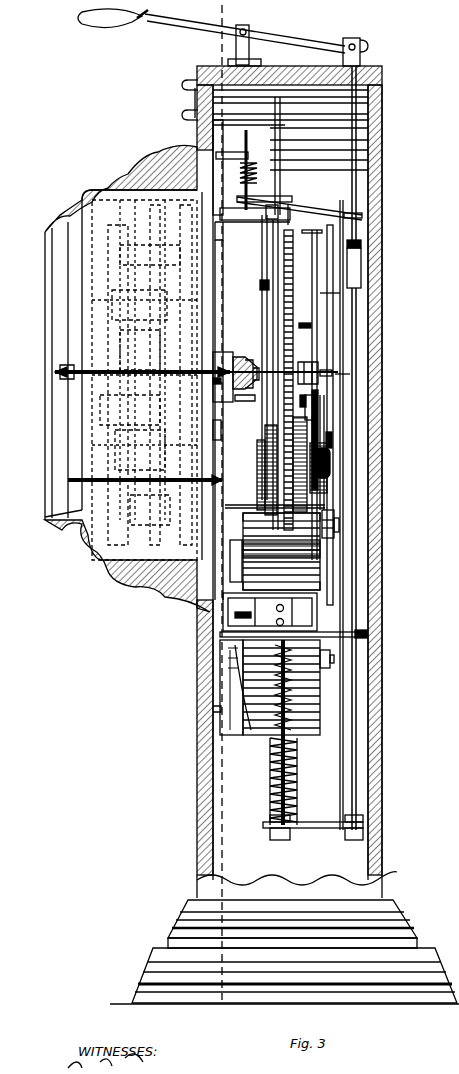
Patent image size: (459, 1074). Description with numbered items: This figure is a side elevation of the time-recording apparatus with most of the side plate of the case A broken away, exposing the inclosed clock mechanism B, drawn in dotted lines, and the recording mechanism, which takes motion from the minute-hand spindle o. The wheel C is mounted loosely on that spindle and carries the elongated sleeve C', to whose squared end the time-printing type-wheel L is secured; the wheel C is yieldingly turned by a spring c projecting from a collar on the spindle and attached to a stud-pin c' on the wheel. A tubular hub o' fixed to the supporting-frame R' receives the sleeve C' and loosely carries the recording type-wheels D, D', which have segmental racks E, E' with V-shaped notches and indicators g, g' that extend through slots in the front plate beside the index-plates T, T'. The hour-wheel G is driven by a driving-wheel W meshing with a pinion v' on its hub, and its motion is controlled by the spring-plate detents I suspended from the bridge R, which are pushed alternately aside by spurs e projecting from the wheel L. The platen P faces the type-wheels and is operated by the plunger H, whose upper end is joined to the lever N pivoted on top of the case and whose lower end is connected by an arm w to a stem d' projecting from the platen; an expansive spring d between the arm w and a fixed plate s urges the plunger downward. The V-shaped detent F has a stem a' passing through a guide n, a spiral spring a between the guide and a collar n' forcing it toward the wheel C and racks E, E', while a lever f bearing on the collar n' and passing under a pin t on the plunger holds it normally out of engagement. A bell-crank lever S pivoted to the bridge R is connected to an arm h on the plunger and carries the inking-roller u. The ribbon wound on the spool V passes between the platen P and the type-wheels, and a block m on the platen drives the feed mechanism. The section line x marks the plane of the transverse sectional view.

The case A is at (382, 180).
The clock mechanism B is at (127, 378).
The lever N is at (223, 37).
The section line x is at (222, 517).
The indicator g is at (147, 112).
The indicator g' is at (148, 81).
The index-plate T is at (243, 104).
The index-plate T' is at (245, 79).
The plunger H is at (352, 596).
The arm h is at (356, 264).
The spiral spring a is at (241, 175).
The stem a' is at (249, 167).
The guide n is at (232, 157).
The collar n' is at (252, 206).
The lever f is at (318, 208).
The pin t is at (350, 214).
The detent F is at (235, 224).
The segmental rack E is at (256, 357).
The segmental rack E' is at (290, 375).
The wheel C is at (227, 420).
The sleeve C' is at (275, 366).
The spring c is at (218, 363).
The stud-pin c' is at (219, 430).
The time-printing type-wheel L is at (293, 290).
The detent I is at (312, 298).
The bridge R is at (328, 415).
The supporting-frame R' is at (207, 458).
The spur e is at (303, 358).
The minute-hand spindle o is at (315, 365).
The tubular hub o' is at (245, 405).
The bell-crank lever S is at (336, 372).
The recording type-wheel D is at (256, 470).
The recording type-wheel D' is at (280, 453).
The driving-wheel W is at (322, 424).
The pinion v' is at (361, 455).
The hour-wheel G is at (275, 547).
The inking-roller u is at (330, 536).
The platen P is at (270, 611).
The block m is at (259, 615).
The fixed plate s is at (304, 632).
The spool V is at (322, 695).
The expansive spiral spring d is at (289, 780).
The stem d' is at (269, 781).
The arm w is at (313, 824).